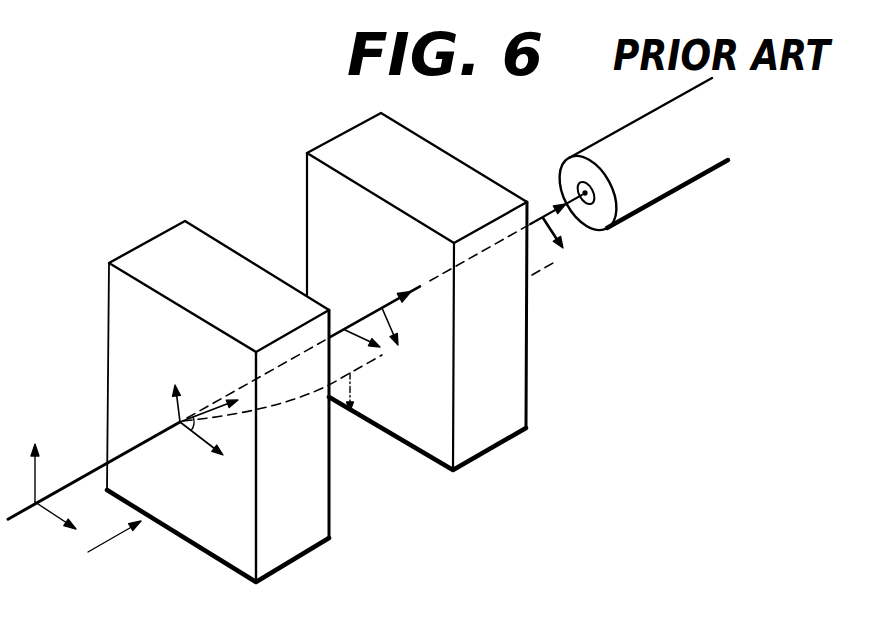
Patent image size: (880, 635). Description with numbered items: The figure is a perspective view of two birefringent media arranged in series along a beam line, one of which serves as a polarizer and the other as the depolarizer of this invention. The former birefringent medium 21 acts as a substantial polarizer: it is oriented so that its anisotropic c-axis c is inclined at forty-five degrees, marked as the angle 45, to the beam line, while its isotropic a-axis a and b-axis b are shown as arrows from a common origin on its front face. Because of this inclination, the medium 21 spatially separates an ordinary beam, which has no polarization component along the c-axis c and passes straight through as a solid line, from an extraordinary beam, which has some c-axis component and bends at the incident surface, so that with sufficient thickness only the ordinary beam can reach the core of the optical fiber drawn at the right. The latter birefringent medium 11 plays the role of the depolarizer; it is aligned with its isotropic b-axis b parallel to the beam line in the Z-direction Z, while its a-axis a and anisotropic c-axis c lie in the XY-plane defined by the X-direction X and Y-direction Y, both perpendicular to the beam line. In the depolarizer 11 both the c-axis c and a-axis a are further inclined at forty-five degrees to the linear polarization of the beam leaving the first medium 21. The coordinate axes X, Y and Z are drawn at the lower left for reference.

The birefringent medium 11 is at (490, 432).
The birefringent medium 21 is at (283, 540).
The 45-degree inclination angle 45 is at (224, 421).
The a-axis a is at (322, 338).
The b-axis b is at (297, 352).
The c-axis c is at (295, 392).
The X-direction X is at (62, 524).
The Y-direction Y is at (31, 458).
The Z-direction Z is at (117, 539).